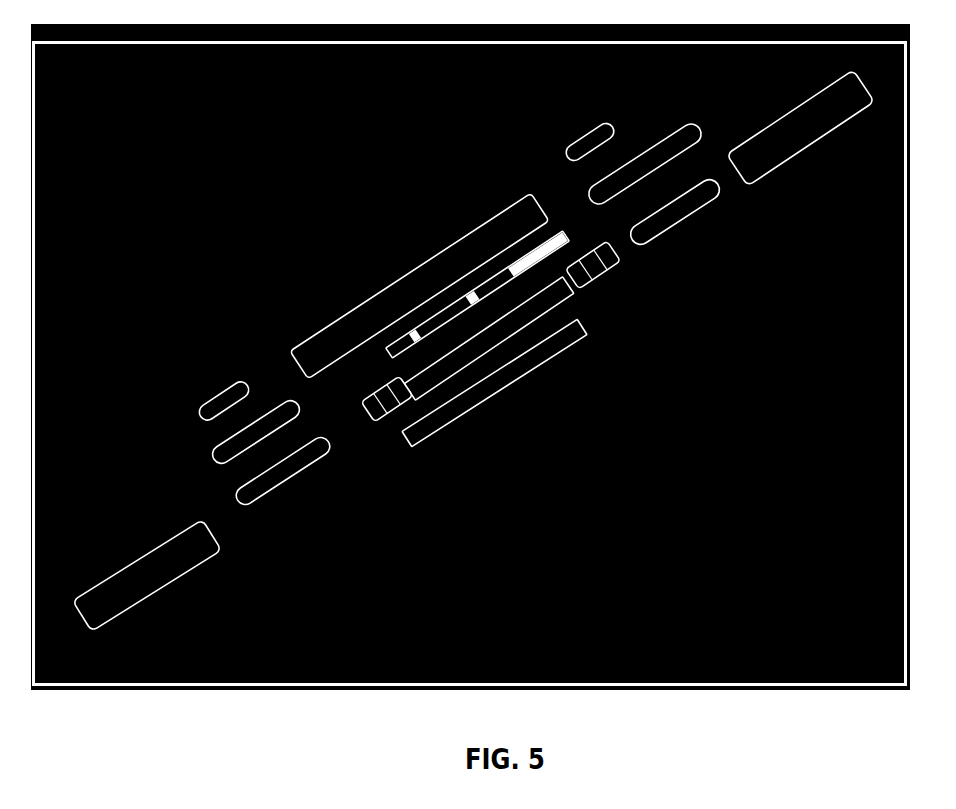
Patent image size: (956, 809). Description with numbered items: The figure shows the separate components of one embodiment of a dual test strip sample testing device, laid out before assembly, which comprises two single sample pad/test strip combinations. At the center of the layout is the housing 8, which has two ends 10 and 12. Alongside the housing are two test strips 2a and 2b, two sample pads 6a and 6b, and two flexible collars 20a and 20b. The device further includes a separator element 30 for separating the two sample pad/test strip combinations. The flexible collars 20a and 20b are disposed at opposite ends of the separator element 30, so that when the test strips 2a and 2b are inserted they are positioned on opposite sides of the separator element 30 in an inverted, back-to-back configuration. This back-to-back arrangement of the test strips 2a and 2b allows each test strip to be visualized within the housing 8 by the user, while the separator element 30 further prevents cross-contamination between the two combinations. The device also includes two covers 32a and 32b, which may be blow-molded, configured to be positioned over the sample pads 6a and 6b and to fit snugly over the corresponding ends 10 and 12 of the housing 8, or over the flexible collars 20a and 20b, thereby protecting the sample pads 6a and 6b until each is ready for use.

The test strip 2a is at (498, 288).
The test strip 2b is at (570, 403).
The sample pad 6a is at (237, 500).
The sample pad 6b is at (612, 130).
The housing 8 is at (460, 265).
The end 10 is at (390, 241).
The end 12 is at (419, 241).
The flexible collar 20a is at (379, 402).
The flexible collar 20b is at (608, 275).
The separator element 30 is at (563, 292).
The cover 32a is at (173, 561).
The cover 32b is at (813, 116).